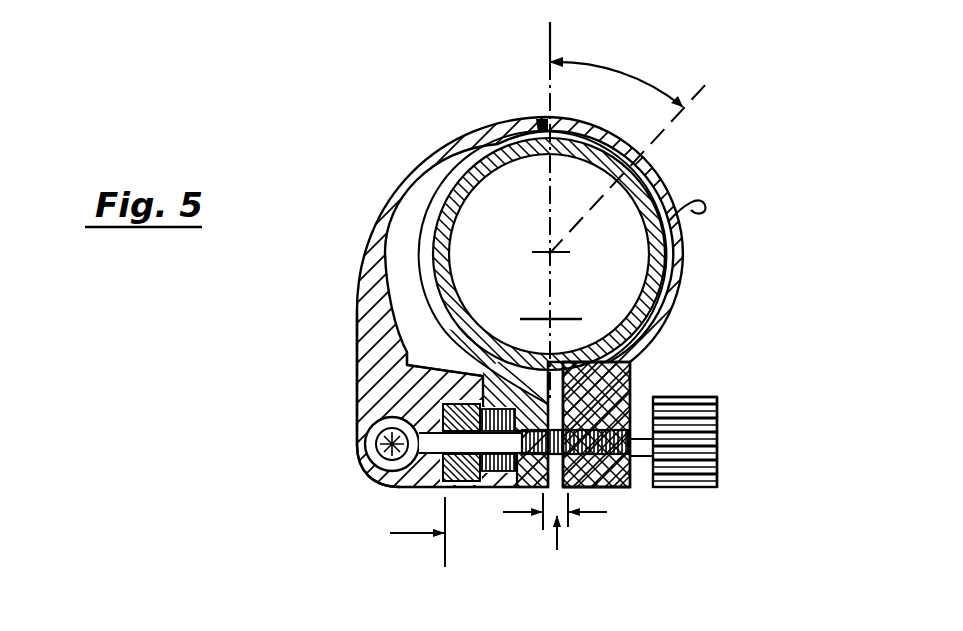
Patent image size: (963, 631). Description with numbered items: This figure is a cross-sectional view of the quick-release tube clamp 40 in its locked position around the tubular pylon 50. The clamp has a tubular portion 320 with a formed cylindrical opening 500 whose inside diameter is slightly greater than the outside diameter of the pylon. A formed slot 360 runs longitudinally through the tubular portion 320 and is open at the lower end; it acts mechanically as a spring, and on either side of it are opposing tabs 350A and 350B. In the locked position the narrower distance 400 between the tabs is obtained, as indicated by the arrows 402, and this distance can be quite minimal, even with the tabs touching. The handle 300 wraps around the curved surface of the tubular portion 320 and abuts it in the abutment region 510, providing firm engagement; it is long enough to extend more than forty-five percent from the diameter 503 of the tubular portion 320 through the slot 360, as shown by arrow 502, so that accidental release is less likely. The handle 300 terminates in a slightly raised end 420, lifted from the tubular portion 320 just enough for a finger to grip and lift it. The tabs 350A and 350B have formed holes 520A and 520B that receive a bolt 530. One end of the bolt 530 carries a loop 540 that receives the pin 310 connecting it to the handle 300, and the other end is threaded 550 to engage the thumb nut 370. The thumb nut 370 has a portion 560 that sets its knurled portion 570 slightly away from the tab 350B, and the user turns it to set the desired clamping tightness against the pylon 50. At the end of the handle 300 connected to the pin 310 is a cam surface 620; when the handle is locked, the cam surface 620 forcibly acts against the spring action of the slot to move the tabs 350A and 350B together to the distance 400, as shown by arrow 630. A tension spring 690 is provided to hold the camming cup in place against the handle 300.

The quick-release tube clamp 40 is at (322, 320).
The tubular pylon 50 is at (660, 263).
The handle 300 is at (443, 148).
The pin 310 is at (372, 446).
The tubular portion 320 is at (660, 263).
The first opposing tab 350A is at (493, 490).
The second opposing tab 350B is at (620, 488).
The formed slot 360 is at (587, 360).
The thumb nut 370 is at (693, 432).
The narrower distance 400 is at (557, 538).
The arrows 402 is at (597, 513).
The raised end 420 is at (706, 202).
The formed cylindrical opening 500 is at (551, 303).
The arrow 502 is at (627, 68).
The diameter 503 is at (548, 43).
The abutment region 510 is at (541, 128).
The first formed hole 520A is at (407, 364).
The second formed hole 520B is at (560, 372).
The bolt 530 is at (467, 488).
The loop 540 is at (368, 430).
The threaded end 550 is at (603, 487).
The portion of thumb nut 560 is at (693, 397).
The knurled portion 570 is at (720, 468).
The cam surface 620 is at (420, 487).
The arrow 630 is at (408, 533).
The tension spring 690 is at (407, 388).